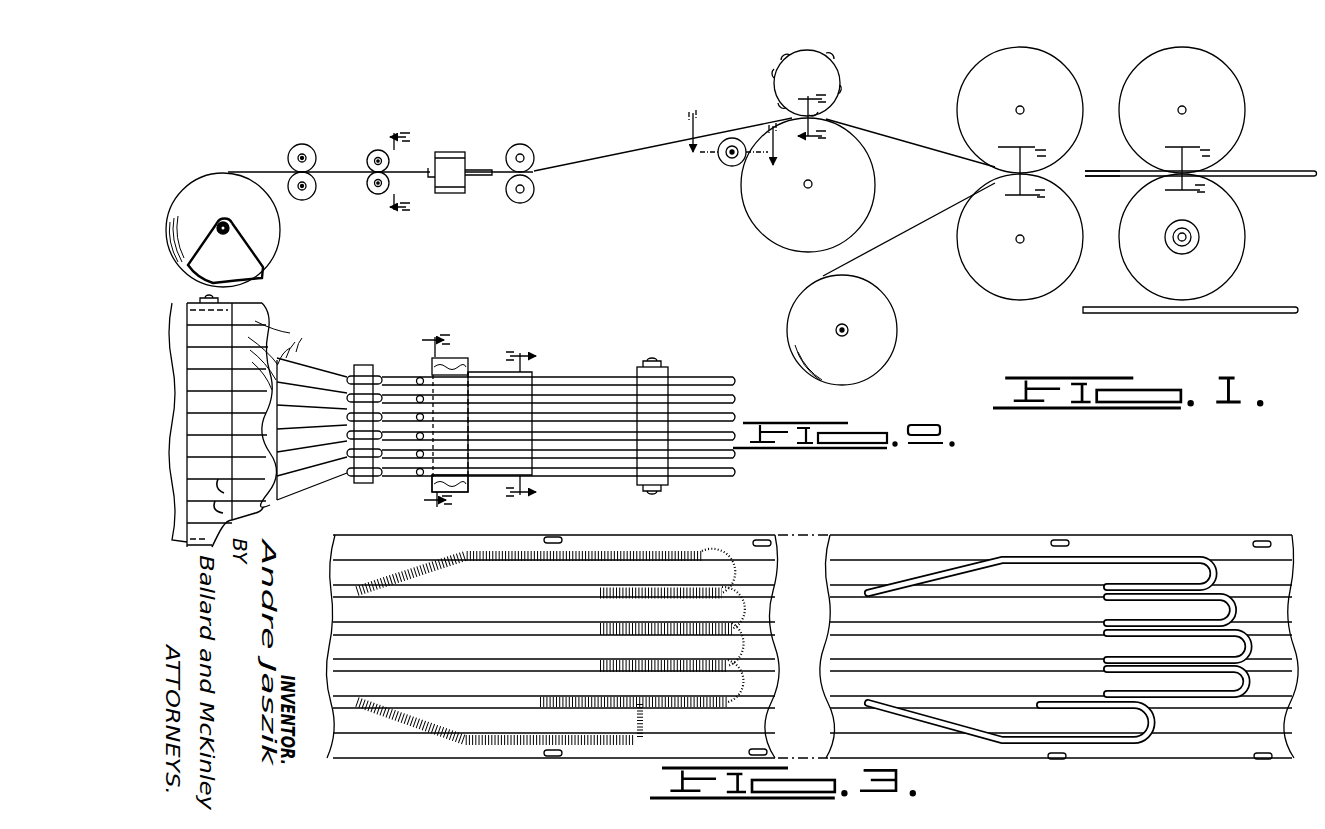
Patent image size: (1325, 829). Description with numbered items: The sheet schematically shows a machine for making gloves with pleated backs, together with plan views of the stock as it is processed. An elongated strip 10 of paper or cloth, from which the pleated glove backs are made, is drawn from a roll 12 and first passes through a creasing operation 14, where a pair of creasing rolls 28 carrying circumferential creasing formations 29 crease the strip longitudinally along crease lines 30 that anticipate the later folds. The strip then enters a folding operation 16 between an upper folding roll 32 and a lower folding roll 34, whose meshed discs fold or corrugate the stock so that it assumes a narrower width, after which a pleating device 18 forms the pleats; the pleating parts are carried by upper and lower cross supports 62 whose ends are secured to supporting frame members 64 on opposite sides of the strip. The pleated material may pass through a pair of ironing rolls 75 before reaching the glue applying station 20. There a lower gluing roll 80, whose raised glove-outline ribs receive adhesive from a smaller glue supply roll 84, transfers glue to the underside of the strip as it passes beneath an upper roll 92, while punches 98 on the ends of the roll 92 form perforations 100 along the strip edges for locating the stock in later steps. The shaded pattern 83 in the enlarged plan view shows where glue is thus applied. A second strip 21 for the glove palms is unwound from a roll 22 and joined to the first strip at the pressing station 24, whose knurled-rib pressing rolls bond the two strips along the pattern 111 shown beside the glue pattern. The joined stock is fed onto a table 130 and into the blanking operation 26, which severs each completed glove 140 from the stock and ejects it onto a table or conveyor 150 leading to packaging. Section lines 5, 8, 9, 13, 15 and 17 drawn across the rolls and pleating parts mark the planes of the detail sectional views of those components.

In FIG. 1, the elongated strip 10 is at (270, 171).
In FIG. 2, the elongated strip 10 is at (241, 411).
In FIG. 3, the elongated strip 10 is at (704, 534).
In FIG. 1, the roll 12 is at (270, 236).
In FIG. 1, the creasing operation 14 is at (301, 161).
In FIG. 1, the creasing rolls 28 is at (296, 110).
In FIG. 2, the creasing rolls 28 is at (222, 301).
In FIG. 1, the folding operation 16 is at (353, 151).
In FIG. 2, the folding operation 16 is at (366, 372).
In FIG. 1, the upper folding roll 32 is at (366, 158).
In FIG. 1, the lower folding roll 34 is at (367, 188).
In FIG. 1, the section line 5- 5 is at (395, 171).
In FIG. 1, the pleating device 18 is at (468, 160).
In FIG. 2, the pleating device 18 is at (480, 368).
In FIG. 1, the ironing rolls 75 is at (540, 150).
In FIG. 2, the ironing rolls 75 is at (643, 366).
In FIG. 1, the glue applying station 20 is at (780, 138).
In FIG. 1, the punches 98 is at (790, 54).
In FIG. 1, the upper roll 92 is at (813, 70).
In FIG. 1, the section line 13- 13 is at (810, 119).
In FIG. 1, the section line 17- 17 is at (727, 145).
In FIG. 1, the smaller roll 84 is at (724, 164).
In FIG. 1, the lower roll 80 is at (752, 208).
In FIG. 1, the second strip 21 is at (882, 246).
In FIG. 1, the roll 22 is at (896, 342).
In FIG. 1, the pressing station 24 is at (995, 173).
In FIG. 1, the pressure rolls 15 is at (938, 120).
In FIG. 1, the table 130 is at (1100, 177).
In FIG. 1, the blanking operation 26 is at (1201, 193).
In FIG. 1, the completed glove 140 is at (1189, 303).
In FIG. 1, the table or conveyor 150 is at (1185, 316).
In FIG. 2, the crease lines 30 is at (272, 332).
In FIG. 2, the creasing formations 29 is at (262, 506).
In FIG. 2, the section line 8- 8 is at (415, 417).
In FIG. 2, the supporting frame members 64 is at (448, 356).
In FIG. 2, the section line 9- 9 is at (534, 430).
In FIG. 2, the cross supports 62 is at (470, 486).
In FIG. 3, the perforations 100 is at (553, 537).
In FIG. 3, the shaded pattern 83 is at (602, 552).
In FIG. 3, the pattern 111 is at (1142, 556).